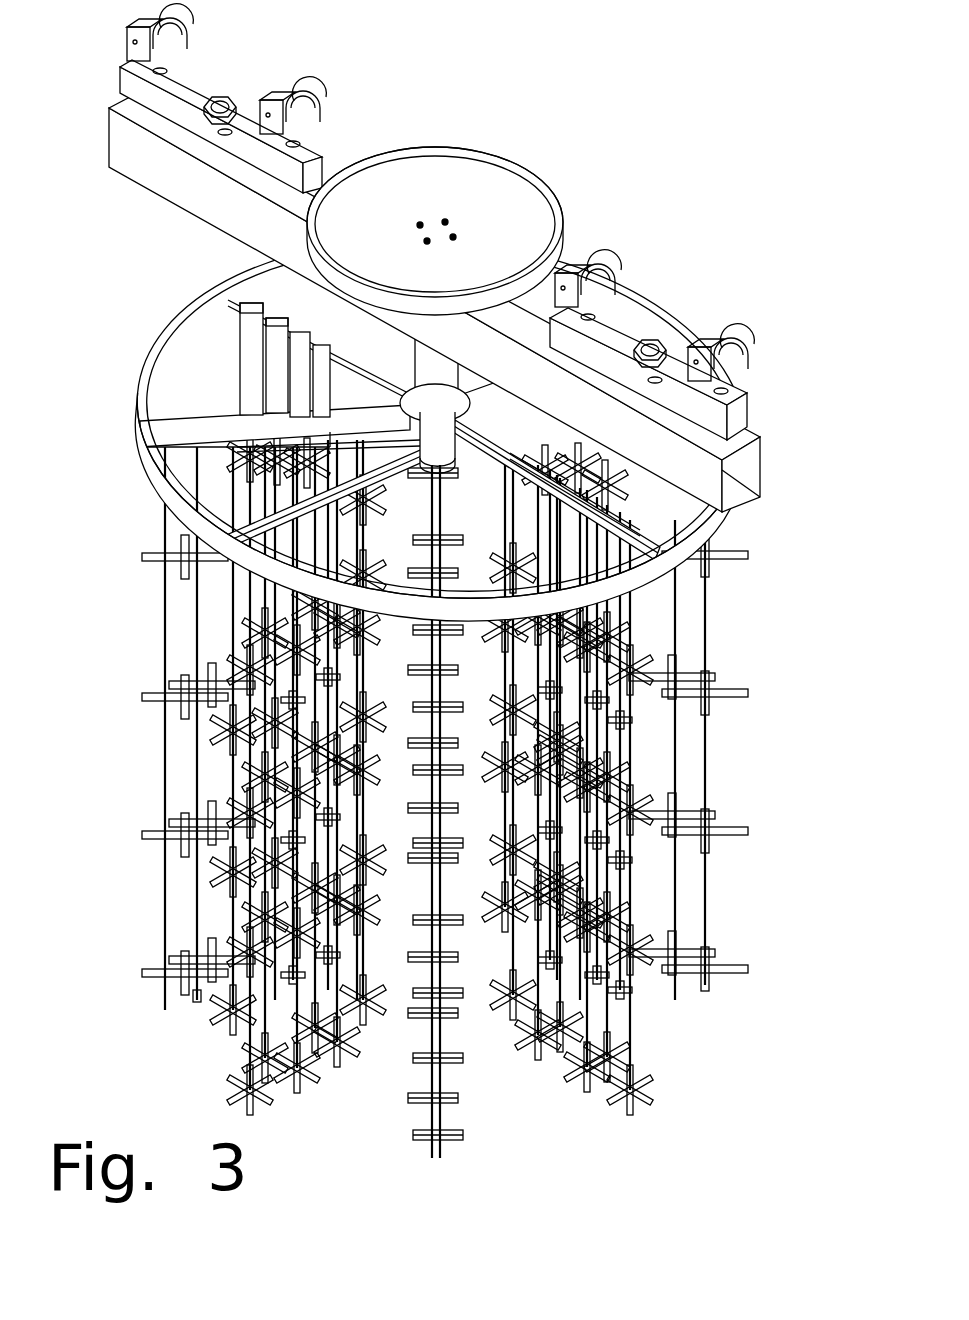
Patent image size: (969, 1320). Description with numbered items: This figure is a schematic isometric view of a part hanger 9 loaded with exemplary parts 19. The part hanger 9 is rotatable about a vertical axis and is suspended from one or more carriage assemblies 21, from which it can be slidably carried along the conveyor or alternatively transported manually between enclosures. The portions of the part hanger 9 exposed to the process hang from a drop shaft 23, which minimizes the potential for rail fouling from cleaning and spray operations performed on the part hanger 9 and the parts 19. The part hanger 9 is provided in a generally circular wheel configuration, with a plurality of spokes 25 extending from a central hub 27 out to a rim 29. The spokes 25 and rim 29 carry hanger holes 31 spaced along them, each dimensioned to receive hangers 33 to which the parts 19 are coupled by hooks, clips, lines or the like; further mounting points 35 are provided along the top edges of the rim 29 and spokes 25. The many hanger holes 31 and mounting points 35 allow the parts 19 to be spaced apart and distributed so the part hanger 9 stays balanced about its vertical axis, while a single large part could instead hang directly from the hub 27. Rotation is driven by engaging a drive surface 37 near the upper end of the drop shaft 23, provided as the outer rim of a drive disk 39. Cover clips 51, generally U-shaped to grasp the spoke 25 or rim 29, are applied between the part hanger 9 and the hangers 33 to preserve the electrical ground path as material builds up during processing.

The part hanger 9 is at (610, 185).
The parts 19 is at (715, 700).
The carriage assemblies 21 is at (185, 95).
The drop shaft 23 is at (290, 285).
The spokes 25 is at (217, 432).
The hub 27 is at (230, 600).
The rim 29 is at (150, 513).
The hanger holes 31 is at (610, 530).
The hangers 33 is at (262, 320).
The mounting points 35 is at (205, 552).
The drive surface 37 is at (585, 253).
The drive disk 39 is at (440, 185).
The cover clips 51 is at (264, 314).